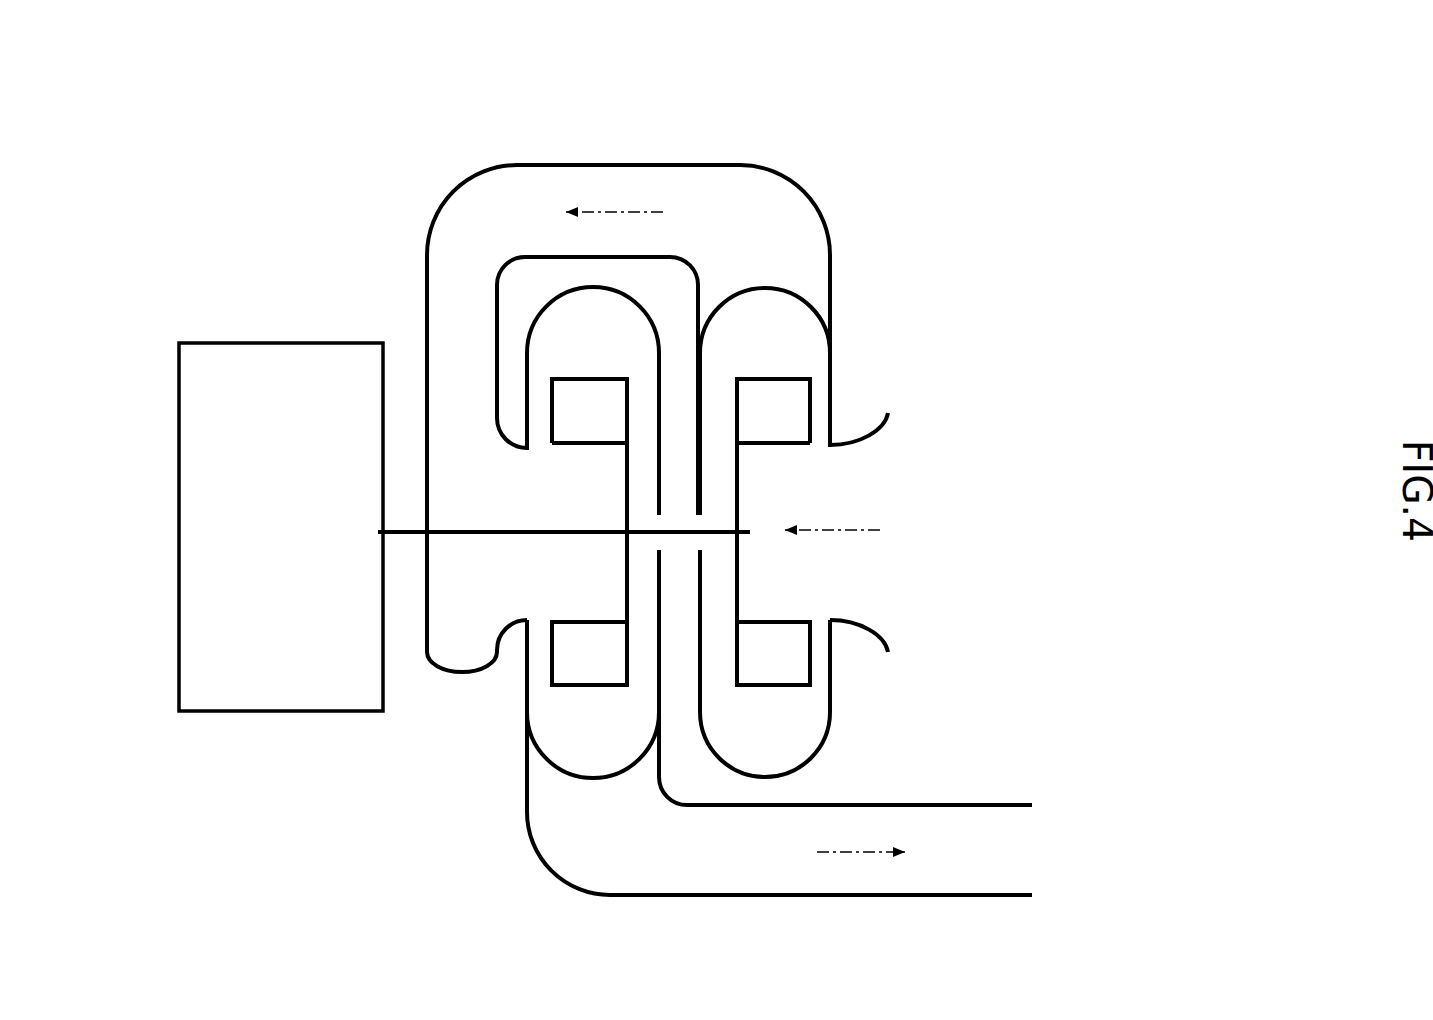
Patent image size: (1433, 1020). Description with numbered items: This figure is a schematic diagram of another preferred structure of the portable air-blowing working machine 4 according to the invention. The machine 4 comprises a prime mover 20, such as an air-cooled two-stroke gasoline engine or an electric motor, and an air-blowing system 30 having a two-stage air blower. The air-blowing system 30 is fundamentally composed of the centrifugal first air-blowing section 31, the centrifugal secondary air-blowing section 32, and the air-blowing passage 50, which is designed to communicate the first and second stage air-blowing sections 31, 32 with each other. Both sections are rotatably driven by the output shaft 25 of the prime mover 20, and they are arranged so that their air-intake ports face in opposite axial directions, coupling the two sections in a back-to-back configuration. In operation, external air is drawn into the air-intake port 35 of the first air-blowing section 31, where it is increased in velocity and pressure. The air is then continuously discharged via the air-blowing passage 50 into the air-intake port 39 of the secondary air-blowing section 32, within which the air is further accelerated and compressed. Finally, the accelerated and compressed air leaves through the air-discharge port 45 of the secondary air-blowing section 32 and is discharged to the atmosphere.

The portable air-blowing working machine 4 is at (807, 161).
The prime mover 20 is at (234, 713).
The output shaft 25 is at (406, 534).
The air-blowing system 30 is at (908, 387).
The first air-blowing section 31 is at (779, 286).
The secondary air-blowing section 32 is at (529, 321).
The air-intake port 35 is at (879, 625).
The air-intake port 39 is at (557, 440).
The air-discharge port 45 is at (886, 800).
The air-blowing passage 50 is at (667, 162).